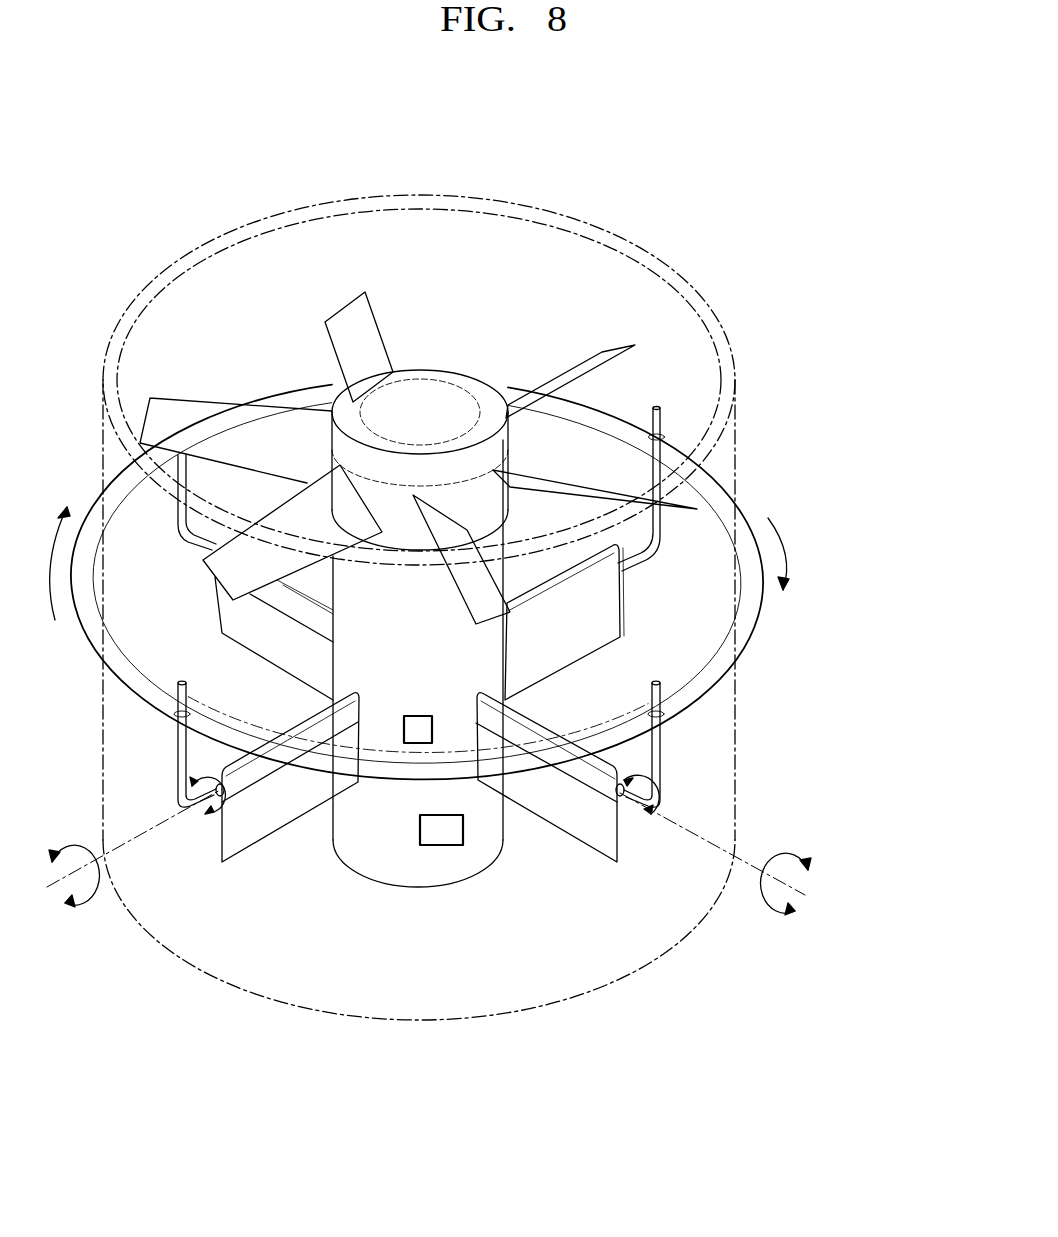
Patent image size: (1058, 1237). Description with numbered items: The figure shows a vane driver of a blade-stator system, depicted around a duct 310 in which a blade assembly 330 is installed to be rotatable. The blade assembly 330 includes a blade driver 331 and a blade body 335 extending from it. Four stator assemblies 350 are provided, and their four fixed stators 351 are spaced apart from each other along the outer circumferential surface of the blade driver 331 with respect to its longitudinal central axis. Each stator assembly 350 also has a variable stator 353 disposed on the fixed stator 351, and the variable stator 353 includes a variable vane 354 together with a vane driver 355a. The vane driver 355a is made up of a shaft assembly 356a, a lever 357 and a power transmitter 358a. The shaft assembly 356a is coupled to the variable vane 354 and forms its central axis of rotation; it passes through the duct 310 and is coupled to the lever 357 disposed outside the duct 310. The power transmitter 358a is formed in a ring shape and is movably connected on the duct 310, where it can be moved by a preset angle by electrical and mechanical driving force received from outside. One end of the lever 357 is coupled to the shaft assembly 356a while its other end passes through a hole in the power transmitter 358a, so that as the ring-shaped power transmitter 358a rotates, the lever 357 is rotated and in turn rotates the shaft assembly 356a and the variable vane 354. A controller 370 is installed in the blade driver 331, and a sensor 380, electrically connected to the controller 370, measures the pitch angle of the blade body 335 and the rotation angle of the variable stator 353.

The duct 310 is at (737, 427).
The blade assembly 330 is at (193, 163).
The blade driver 331 is at (377, 410).
The blade body 335 is at (293, 512).
The stator assembly 350 is at (922, 848).
The fixed stator 351 is at (565, 812).
The variable stator 353 is at (880, 702).
The variable vane 354 is at (585, 775).
The vane driver 355a is at (827, 622).
The shaft assembly 356a is at (643, 807).
The lever 357 is at (657, 750).
The power transmitter 358a is at (745, 630).
The controller 370 is at (440, 847).
The sensor 380 is at (410, 745).